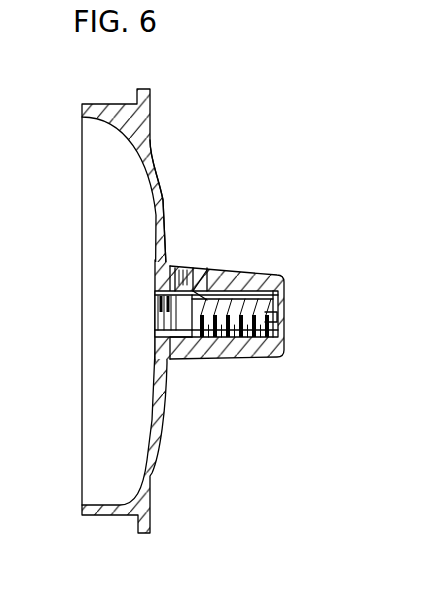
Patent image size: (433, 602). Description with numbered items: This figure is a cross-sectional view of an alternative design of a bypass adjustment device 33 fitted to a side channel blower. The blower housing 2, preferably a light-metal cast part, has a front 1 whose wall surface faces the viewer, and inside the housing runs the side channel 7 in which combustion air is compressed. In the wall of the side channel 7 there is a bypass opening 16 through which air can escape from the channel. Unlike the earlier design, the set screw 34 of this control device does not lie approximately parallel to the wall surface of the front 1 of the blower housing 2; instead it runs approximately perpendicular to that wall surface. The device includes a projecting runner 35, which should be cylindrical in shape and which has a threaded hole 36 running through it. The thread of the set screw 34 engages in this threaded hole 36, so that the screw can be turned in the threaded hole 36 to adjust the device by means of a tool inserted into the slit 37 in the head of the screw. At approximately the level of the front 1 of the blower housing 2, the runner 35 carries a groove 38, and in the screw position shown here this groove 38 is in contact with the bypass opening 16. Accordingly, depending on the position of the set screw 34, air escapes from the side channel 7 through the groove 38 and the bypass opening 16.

The front 1 is at (162, 191).
The blower housing 2 is at (166, 154).
The side channel 7 is at (105, 208).
The bypass opening 16 is at (152, 317).
The bypass adjustment device 33 is at (272, 380).
The set screw 34 is at (263, 278).
The projecting runner 35 is at (243, 278).
The threaded hole 36 is at (178, 340).
The slit 37 is at (272, 317).
The groove 38 is at (195, 278).